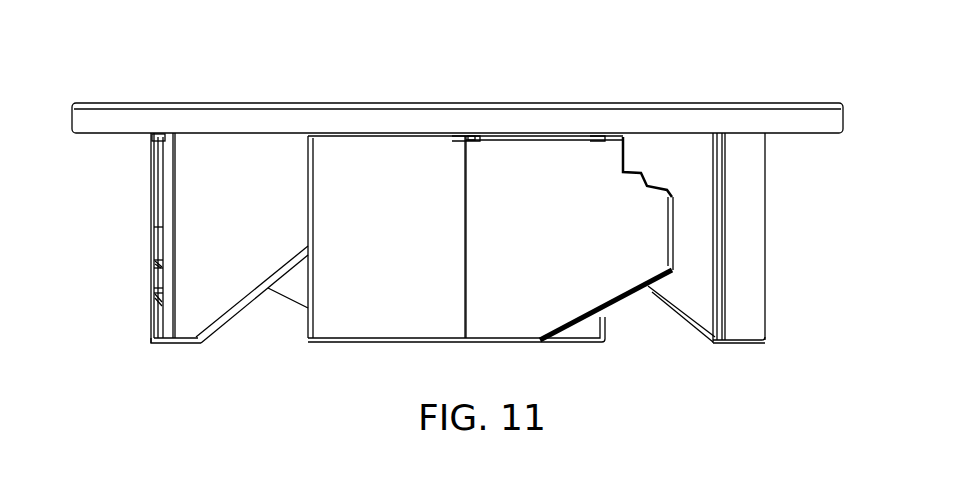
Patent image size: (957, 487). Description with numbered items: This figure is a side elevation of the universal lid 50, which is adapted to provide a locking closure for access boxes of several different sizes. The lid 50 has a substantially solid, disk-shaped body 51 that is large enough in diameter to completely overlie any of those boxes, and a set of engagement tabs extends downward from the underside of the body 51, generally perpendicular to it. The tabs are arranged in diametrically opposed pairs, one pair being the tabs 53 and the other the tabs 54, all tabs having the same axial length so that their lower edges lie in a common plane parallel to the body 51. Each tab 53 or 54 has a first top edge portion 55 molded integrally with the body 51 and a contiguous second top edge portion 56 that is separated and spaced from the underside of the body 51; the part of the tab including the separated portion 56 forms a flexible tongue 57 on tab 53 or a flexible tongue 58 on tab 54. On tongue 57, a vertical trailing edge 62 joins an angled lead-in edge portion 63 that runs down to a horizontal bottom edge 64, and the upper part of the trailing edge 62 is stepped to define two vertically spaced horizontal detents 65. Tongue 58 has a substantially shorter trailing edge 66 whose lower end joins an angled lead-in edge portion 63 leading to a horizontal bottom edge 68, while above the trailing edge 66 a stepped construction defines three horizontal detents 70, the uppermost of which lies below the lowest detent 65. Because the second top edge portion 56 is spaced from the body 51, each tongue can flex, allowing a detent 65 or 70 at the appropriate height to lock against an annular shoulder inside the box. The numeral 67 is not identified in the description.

The universal lid 50 is at (314, 96).
The disk-shaped body 51 is at (402, 121).
The tab 53 is at (352, 320).
The tab 54 is at (237, 169).
The first top edge portion 55 is at (455, 136).
The second top edge portion 56 is at (165, 134).
The flexible tongue 57 is at (549, 247).
The flexible tongue 58 is at (158, 198).
The vertical trailing edge 62 is at (674, 242).
The angled lead-in edge portion 63 is at (267, 290).
The horizontal bottom edge 64 is at (500, 343).
The horizontal detents 65 is at (637, 170).
The trailing edge 66 is at (160, 303).
The foot outer wall 67 is at (152, 317).
The horizontal bottom edge 68 is at (178, 345).
The horizontal detents 70 is at (160, 270).